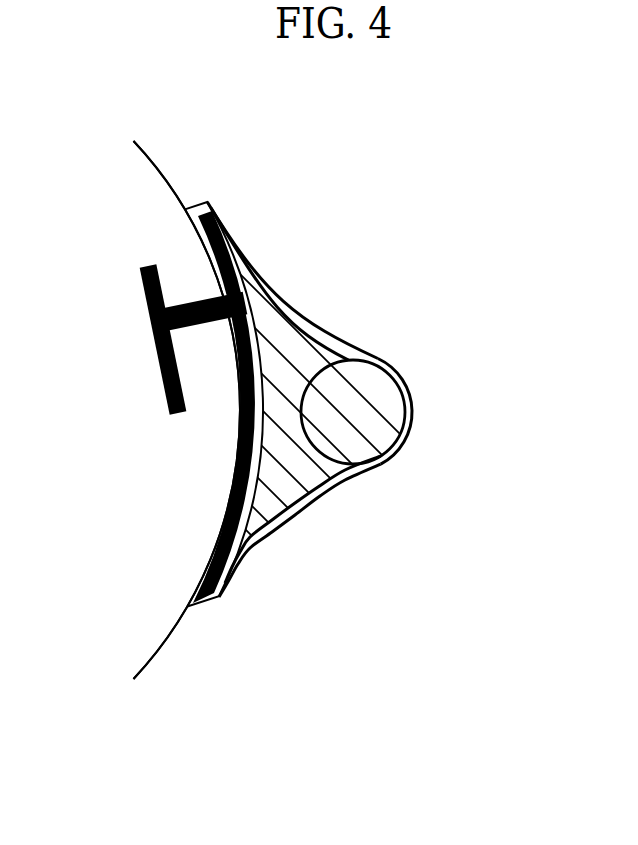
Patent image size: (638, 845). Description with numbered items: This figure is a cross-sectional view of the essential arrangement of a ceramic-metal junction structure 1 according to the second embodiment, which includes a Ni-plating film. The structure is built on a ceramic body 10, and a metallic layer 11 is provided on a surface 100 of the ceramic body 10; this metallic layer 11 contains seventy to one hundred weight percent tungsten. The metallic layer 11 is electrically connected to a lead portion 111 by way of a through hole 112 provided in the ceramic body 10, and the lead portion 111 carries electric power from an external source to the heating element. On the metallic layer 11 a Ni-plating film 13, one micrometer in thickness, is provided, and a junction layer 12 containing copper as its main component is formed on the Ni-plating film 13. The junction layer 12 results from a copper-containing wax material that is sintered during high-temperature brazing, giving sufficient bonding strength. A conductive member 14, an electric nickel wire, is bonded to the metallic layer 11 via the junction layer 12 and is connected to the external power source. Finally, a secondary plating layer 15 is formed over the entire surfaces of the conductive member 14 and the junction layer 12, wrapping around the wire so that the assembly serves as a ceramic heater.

The ceramic-metal junction structure 1 is at (468, 257).
The ceramic body 10 is at (138, 623).
The surface of the ceramic body 100 is at (168, 179).
The metallic layer 11 is at (217, 590).
The lead portion 111 is at (165, 357).
The through hole 112 is at (185, 305).
The junction layer 12 is at (308, 492).
The Ni-plating film 13 is at (256, 530).
The conductive member 14 is at (372, 400).
The secondary plating layer 15 is at (347, 473).